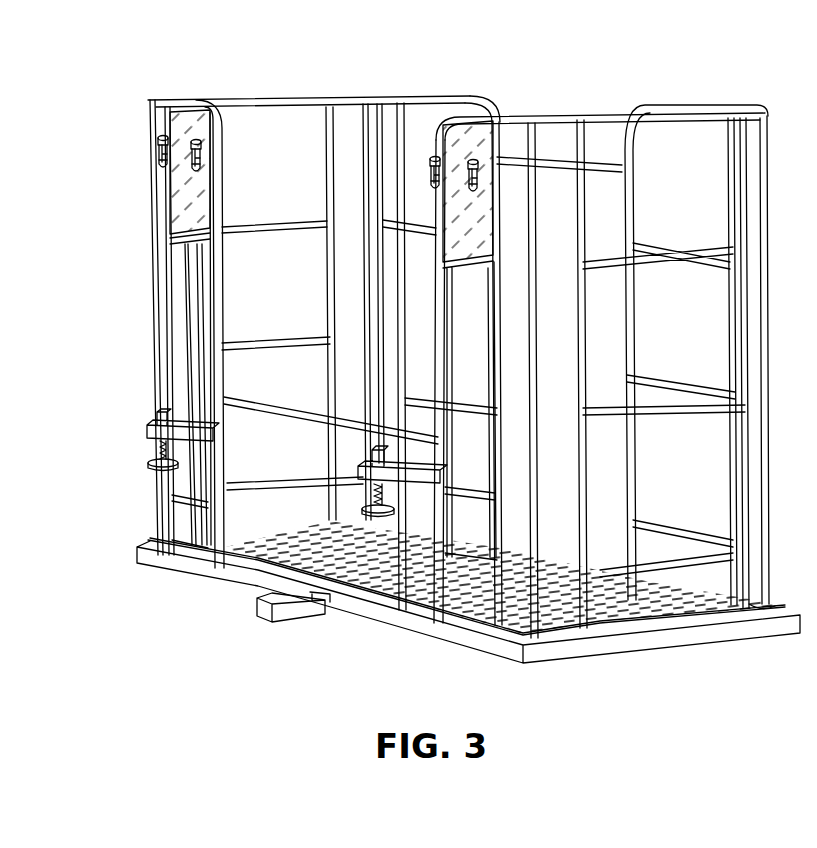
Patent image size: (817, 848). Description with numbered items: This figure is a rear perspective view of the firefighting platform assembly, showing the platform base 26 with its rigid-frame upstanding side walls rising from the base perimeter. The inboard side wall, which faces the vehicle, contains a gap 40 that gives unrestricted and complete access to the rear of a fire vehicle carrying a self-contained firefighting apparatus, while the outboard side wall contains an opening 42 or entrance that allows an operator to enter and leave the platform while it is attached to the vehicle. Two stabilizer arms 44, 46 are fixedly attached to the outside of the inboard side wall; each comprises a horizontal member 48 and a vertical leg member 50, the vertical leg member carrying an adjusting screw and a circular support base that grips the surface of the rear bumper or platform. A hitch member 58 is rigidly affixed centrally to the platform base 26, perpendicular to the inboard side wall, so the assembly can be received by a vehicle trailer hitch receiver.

The platform base 26 is at (190, 601).
The gap 40 is at (260, 321).
The opening 42 is at (550, 220).
The stabilizer arm 44 is at (140, 458).
The stabilizer arm 46 is at (350, 512).
The horizontal member 48 is at (187, 417).
The vertical leg member 50 is at (158, 445).
The hitch member 58 is at (297, 613).